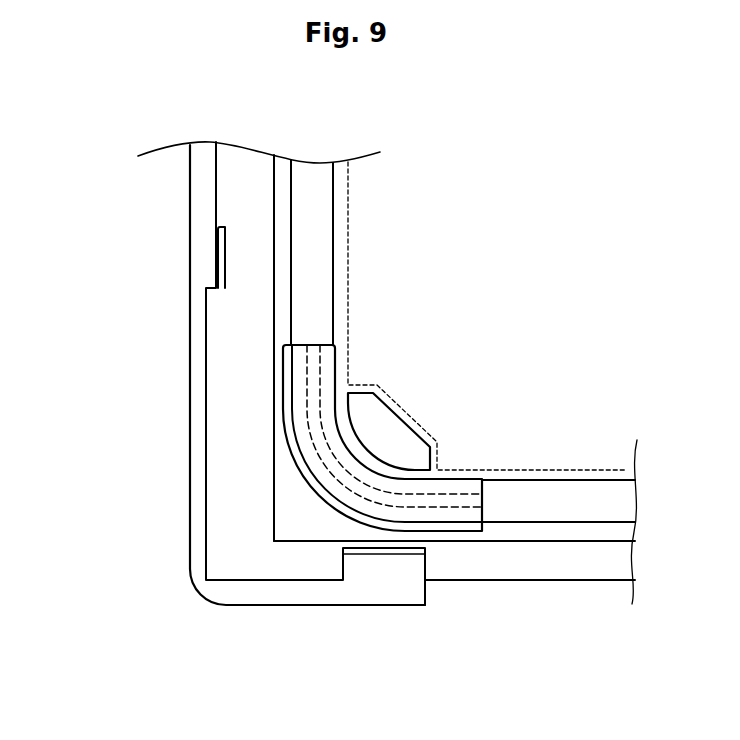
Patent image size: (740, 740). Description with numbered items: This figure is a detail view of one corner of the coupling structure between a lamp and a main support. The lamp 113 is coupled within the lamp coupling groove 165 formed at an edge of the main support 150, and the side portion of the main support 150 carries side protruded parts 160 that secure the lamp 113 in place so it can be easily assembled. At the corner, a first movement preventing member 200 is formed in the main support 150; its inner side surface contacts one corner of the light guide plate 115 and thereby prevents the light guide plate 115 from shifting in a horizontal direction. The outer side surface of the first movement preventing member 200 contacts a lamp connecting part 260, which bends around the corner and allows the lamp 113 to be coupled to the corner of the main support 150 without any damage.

The lamp 113 is at (575, 502).
The light guide plate 115 is at (593, 467).
The main support 150 is at (196, 393).
The side protruded part 160 is at (245, 253).
The lamp coupling groove 165 is at (280, 315).
The first movement preventing member 200 is at (390, 415).
The lamp connecting part 260 is at (297, 519).